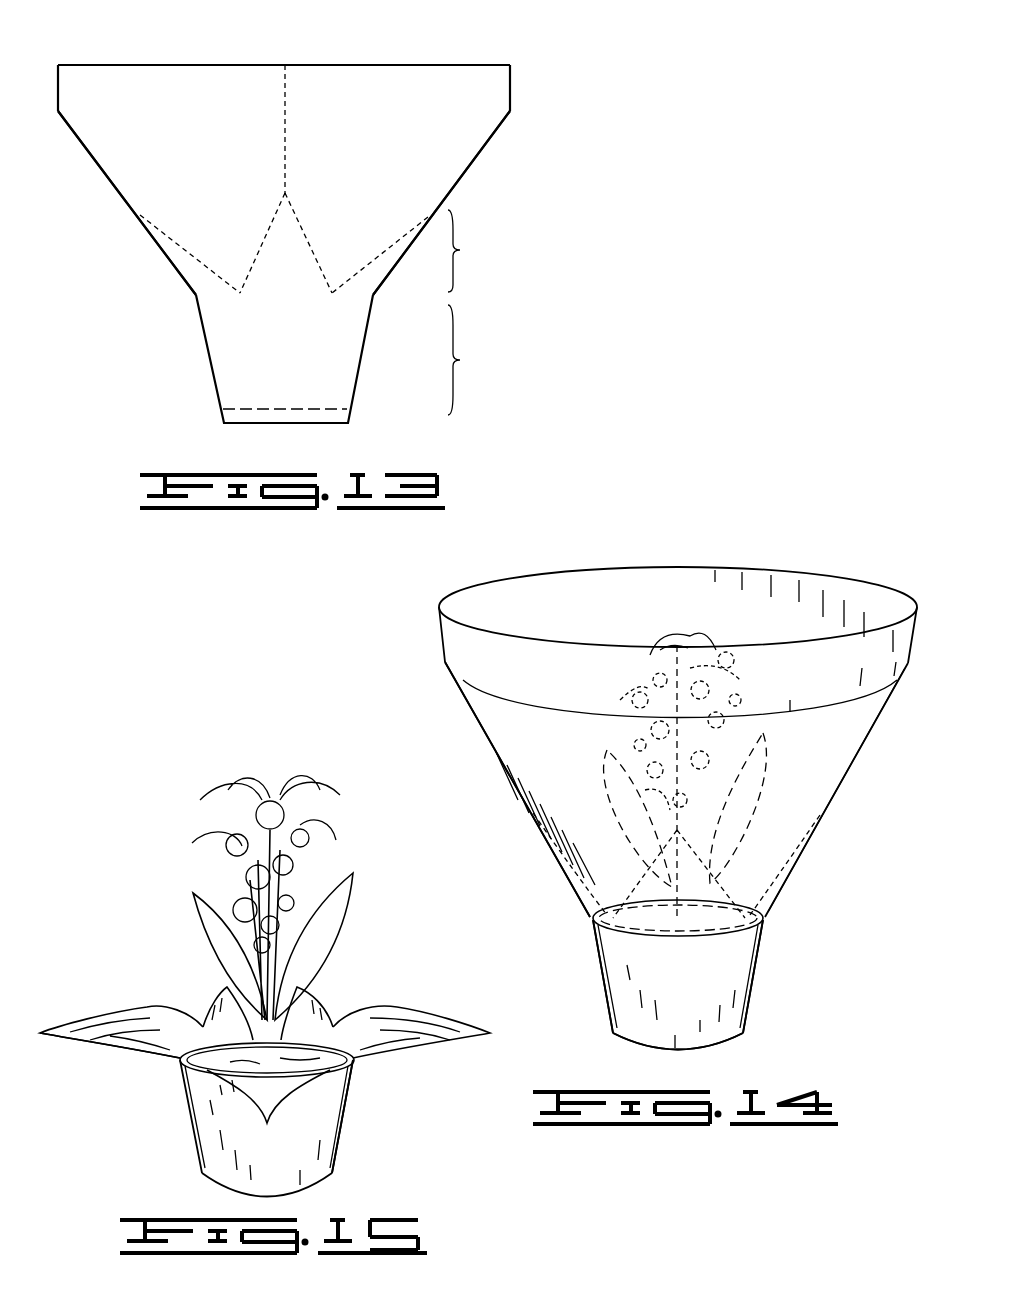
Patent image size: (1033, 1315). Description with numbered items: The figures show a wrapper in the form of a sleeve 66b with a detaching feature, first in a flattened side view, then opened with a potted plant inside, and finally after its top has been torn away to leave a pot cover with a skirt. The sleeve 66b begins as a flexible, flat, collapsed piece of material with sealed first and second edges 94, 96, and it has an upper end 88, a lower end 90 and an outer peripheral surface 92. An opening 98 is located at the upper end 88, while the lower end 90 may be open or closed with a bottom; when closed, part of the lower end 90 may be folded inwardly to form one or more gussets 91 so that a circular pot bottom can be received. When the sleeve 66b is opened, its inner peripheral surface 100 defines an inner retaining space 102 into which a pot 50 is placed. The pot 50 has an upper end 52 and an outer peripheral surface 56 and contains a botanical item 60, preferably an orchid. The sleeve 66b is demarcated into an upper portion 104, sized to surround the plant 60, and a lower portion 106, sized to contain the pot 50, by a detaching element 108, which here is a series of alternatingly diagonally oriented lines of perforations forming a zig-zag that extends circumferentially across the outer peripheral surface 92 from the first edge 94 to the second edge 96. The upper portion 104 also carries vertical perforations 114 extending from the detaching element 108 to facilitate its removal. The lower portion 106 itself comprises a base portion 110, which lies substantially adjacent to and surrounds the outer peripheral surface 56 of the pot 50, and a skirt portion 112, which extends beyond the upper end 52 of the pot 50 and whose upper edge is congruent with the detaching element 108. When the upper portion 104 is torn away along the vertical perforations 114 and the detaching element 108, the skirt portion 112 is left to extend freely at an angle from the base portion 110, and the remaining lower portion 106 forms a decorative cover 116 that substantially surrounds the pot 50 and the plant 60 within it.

In FIG. 14, the pot 50 is at (757, 972).
In FIG. 15, the pot 50 is at (340, 1017).
In FIG. 14, the upper end 52 is at (723, 937).
In FIG. 14, the outer peripheral surface 56 is at (628, 972).
In FIG. 14, the botanical item 60 is at (763, 787).
In FIG. 15, the botanical item 60 is at (167, 893).
In FIG. 13, the sleeve 66b is at (532, 94).
In FIG. 14, the sleeve 66b is at (563, 572).
In FIG. 13, the upper end 88 is at (302, 65).
In FIG. 14, the upper end 88 is at (597, 570).
In FIG. 13, the lower end 90 is at (336, 424).
In FIG. 14, the lower end 90 is at (713, 1053).
In FIG. 13, the gussets 91 is at (330, 407).
In FIG. 13, the outer peripheral surface 92 is at (407, 90).
In FIG. 14, the outer peripheral surface 92 is at (510, 735).
In FIG. 13, the first edge 94 is at (182, 277).
In FIG. 13, the second edge 96 is at (465, 173).
In FIG. 14, the opening 98 is at (813, 598).
In FIG. 14, the inner peripheral surface 100 is at (467, 613).
In FIG. 14, the inner retaining space 102 is at (698, 575).
In FIG. 13, the upper portion 104 is at (153, 142).
In FIG. 14, the upper portion 104 is at (471, 715).
In FIG. 13, the lower portion 106 is at (266, 348).
In FIG. 14, the lower portion 106 is at (620, 1003).
In FIG. 15, the lower portion 106 is at (357, 1082).
In FIG. 13, the detaching element 108 is at (273, 220).
In FIG. 14, the detaching element 108 is at (590, 880).
In FIG. 13, the base portion 110 is at (460, 360).
In FIG. 14, the base portion 110 is at (755, 983).
In FIG. 15, the base portion 110 is at (340, 1123).
In FIG. 13, the skirt portion 112 is at (460, 250).
In FIG. 14, the skirt portion 112 is at (772, 883).
In FIG. 15, the skirt portion 112 is at (140, 1030).
In FIG. 13, the vertical perforations 114 is at (285, 108).
In FIG. 14, the vertical perforations 114 is at (672, 680).
In FIG. 15, the decorative cover 116 is at (120, 993).